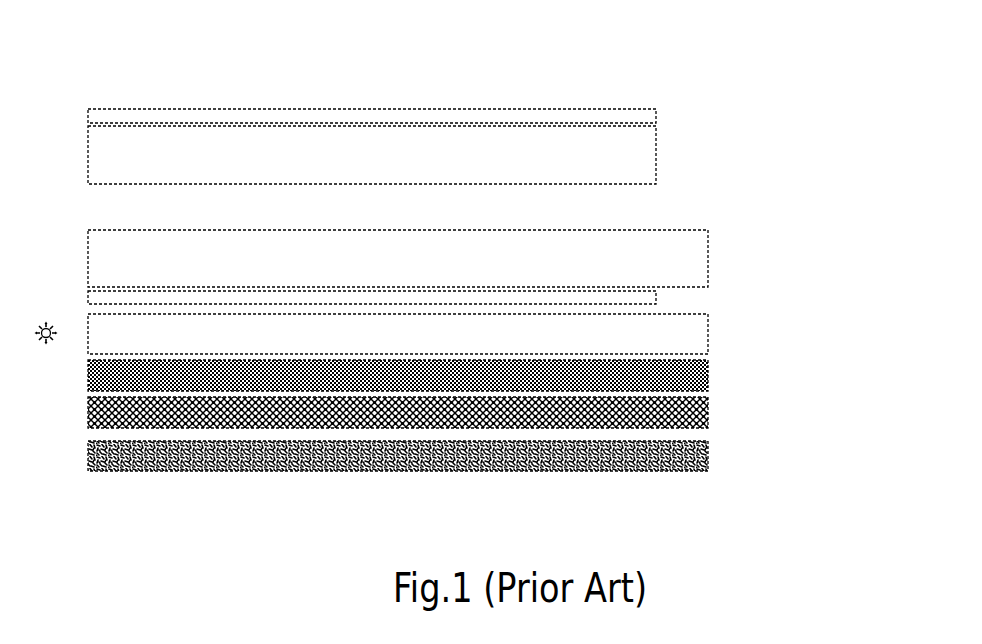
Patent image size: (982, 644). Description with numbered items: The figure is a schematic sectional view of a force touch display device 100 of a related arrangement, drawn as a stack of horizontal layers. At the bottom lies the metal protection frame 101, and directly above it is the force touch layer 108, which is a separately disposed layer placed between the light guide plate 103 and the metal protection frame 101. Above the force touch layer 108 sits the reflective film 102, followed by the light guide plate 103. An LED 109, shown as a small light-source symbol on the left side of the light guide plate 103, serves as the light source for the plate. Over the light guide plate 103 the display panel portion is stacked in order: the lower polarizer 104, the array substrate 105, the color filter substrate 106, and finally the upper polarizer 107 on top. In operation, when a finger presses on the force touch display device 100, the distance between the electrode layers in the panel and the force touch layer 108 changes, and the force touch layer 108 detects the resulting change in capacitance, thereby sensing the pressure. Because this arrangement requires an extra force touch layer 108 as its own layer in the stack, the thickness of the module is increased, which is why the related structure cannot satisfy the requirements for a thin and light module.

The force touch display device 100 is at (783, 56).
The metal protection frame 101 is at (708, 456).
The reflective film 102 is at (708, 376).
The light guide plate 103 is at (708, 334).
The lower polarizer 104 is at (656, 298).
The array substrate 105 is at (708, 258).
The color filter substrate 106 is at (656, 155).
The upper polarizer 107 is at (656, 116).
The force touch layer 108 is at (708, 413).
The LED 109 is at (46, 348).